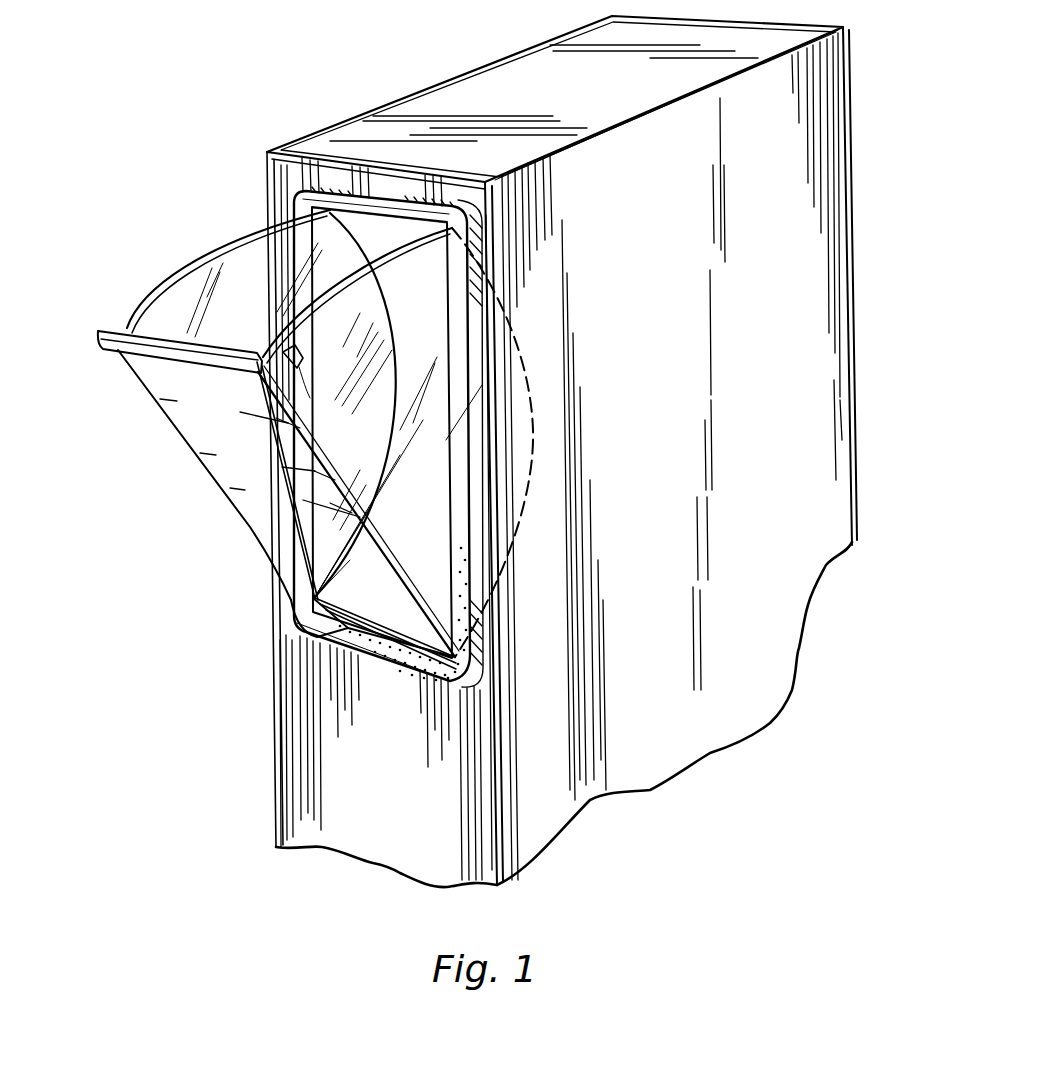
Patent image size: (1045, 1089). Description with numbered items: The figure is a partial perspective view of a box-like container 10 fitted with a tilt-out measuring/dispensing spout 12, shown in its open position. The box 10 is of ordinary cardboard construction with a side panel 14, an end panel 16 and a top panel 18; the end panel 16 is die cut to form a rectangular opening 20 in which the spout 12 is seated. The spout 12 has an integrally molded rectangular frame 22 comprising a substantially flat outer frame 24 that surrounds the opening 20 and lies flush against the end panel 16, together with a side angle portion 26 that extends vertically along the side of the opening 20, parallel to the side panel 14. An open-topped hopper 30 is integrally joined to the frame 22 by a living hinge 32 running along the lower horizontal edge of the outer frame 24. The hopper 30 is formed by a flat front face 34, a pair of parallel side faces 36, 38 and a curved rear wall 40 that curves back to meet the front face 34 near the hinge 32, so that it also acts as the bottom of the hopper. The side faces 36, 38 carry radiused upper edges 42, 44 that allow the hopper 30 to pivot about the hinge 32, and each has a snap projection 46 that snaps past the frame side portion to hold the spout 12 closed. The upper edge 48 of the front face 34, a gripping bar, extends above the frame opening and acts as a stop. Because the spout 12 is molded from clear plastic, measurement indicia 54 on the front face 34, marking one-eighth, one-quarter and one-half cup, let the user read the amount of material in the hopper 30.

The box-like container 10 is at (878, 150).
The measuring/dispensing spout 12 is at (206, 462).
The side panel 14 is at (812, 425).
The end panel 16 is at (345, 797).
The top panel 18 is at (514, 76).
The rectangular opening 20 is at (383, 242).
The rectangular frame 22 is at (303, 639).
The outer frame 24 is at (388, 658).
The side angle portion 26 is at (240, 246).
The open-topped hopper 30 is at (163, 277).
The living hinge 32 is at (348, 628).
The front face 34 is at (150, 375).
The side face 36 is at (195, 263).
The side face 38 is at (455, 528).
The curved rear wall 40 is at (410, 376).
The radiused upper edge 42 is at (262, 233).
The radiused upper edge 44 is at (290, 326).
The snap projection 46 is at (301, 370).
The upper edge 48 is at (112, 347).
The measurement indicia 54 is at (235, 506).